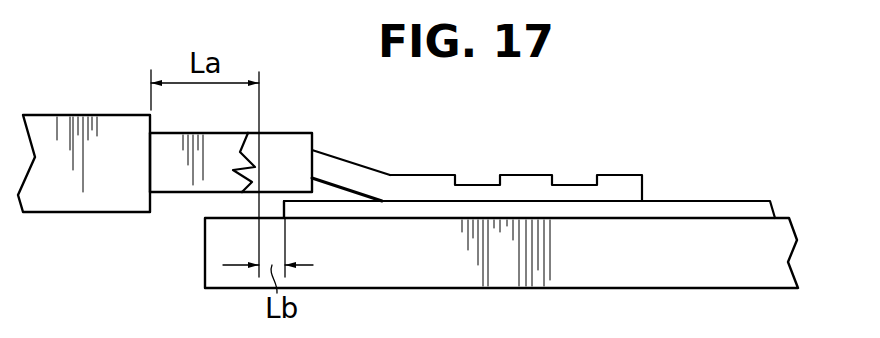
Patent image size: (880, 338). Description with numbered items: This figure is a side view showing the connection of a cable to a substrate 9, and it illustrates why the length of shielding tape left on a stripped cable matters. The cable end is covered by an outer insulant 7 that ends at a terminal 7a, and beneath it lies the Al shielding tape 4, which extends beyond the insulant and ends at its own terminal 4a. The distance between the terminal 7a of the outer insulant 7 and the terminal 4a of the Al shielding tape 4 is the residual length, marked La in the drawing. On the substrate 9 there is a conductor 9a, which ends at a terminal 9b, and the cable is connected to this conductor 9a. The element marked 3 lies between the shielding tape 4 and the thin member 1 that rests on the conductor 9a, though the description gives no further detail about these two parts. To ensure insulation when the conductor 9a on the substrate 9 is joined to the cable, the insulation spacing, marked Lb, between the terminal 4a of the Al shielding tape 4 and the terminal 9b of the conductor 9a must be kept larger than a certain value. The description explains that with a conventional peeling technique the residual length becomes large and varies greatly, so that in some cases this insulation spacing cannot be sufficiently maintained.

The thin plate member 1 is at (617, 177).
The holder 3 is at (293, 133).
The Al shielding tape 4 is at (210, 133).
The terminal of Al shielding tape 4a is at (255, 168).
The outer insulant 7 is at (57, 137).
The terminal of outer insulant 7a is at (143, 155).
The substrate 9 is at (607, 290).
The conductor 9a is at (695, 212).
The terminal of conductor 9b is at (285, 211).